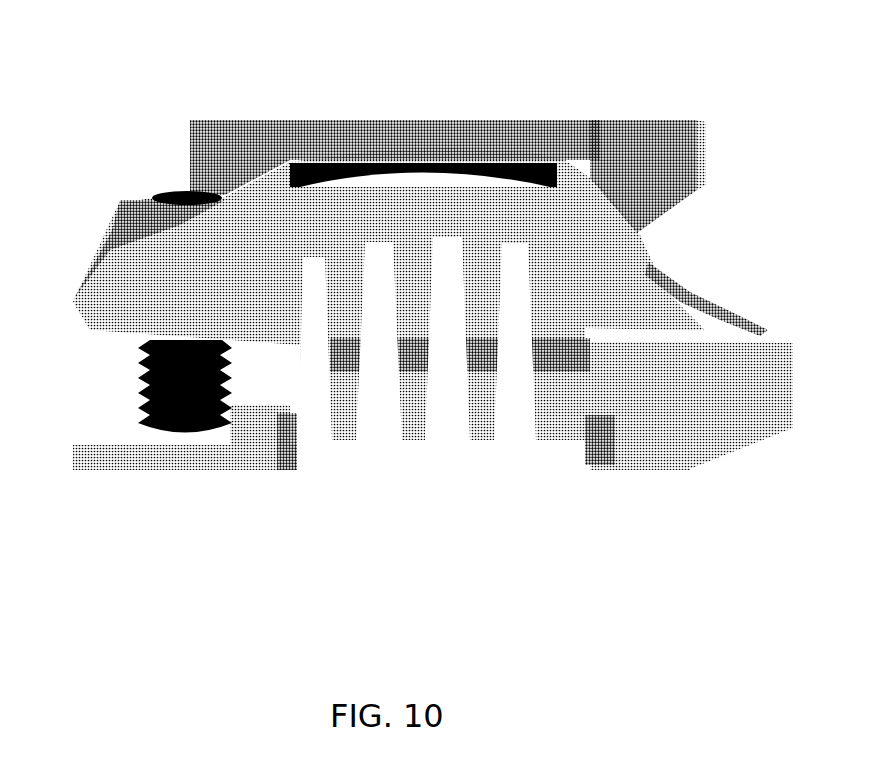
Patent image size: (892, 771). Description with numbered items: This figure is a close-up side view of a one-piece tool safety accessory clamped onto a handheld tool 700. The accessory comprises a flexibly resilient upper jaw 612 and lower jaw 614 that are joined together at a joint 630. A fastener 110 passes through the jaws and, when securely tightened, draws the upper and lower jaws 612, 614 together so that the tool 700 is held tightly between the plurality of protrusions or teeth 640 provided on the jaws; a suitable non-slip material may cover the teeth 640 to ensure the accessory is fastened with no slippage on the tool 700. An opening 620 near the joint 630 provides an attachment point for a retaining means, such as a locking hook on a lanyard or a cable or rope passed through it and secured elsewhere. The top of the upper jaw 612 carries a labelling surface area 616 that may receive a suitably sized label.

The fastener 110 is at (150, 195).
The upper jaw 612 is at (73, 300).
The lower jaw 614 is at (87, 457).
The labelling surface area 616 is at (513, 177).
The opening 620 is at (716, 313).
The joint 630 is at (757, 437).
The teeth 640 is at (340, 323).
The tool 700 is at (683, 152).